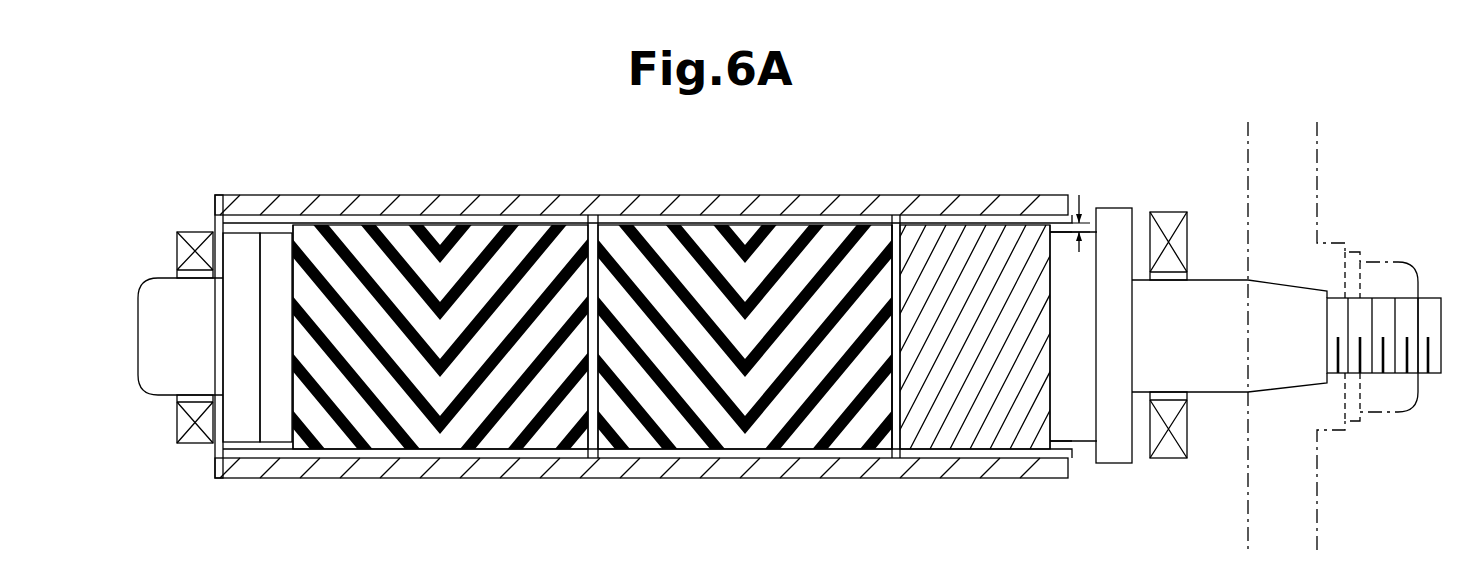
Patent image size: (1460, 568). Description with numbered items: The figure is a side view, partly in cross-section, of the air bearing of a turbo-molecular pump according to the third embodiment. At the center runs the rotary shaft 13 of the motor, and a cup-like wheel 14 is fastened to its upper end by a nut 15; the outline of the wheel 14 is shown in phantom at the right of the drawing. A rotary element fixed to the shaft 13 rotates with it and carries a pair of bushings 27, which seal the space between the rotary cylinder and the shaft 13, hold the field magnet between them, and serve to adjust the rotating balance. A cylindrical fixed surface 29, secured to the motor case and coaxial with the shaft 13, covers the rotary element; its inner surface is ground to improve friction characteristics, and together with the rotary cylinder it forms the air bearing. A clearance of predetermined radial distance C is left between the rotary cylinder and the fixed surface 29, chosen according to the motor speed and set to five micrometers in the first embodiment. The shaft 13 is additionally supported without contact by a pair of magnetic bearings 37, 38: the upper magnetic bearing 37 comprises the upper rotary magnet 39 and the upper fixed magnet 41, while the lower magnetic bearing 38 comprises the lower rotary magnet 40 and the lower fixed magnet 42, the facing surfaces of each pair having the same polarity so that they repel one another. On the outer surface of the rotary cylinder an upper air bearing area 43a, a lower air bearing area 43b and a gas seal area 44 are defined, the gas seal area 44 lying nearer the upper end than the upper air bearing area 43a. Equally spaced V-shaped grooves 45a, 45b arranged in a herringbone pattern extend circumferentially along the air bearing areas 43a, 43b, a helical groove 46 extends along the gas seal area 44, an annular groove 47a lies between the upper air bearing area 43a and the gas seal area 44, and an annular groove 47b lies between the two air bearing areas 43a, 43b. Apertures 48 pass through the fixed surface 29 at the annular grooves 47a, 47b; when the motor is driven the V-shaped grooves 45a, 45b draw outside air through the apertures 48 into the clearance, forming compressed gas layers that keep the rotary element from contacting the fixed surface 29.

The rotary shaft 13 is at (1217, 280).
The wheel 14 is at (1317, 165).
The nut 15 is at (1397, 262).
The bushing 27 is at (275, 432).
The fixed surface 29 is at (980, 208).
The upper magnetic bearing 37 is at (1137, 281).
The lower magnetic bearing 38 is at (224, 271).
The upper rotary magnet 39 is at (1112, 222).
The lower rotary magnet 40 is at (247, 293).
The upper fixed magnet 41 is at (1166, 306).
The lower fixed magnet 42 is at (193, 232).
The upper air bearing area 43a is at (745, 291).
The lower air bearing area 43b is at (476, 291).
The gas seal area 44 is at (980, 430).
The V-shaped grooves 45a is at (792, 246).
The V-shaped grooves 45b is at (430, 237).
The helical groove 46 is at (1047, 442).
The annular groove 47a is at (878, 238).
The annular groove 47b is at (610, 238).
The apertures 48 is at (590, 215).
The clearance distance C is at (1079, 237).